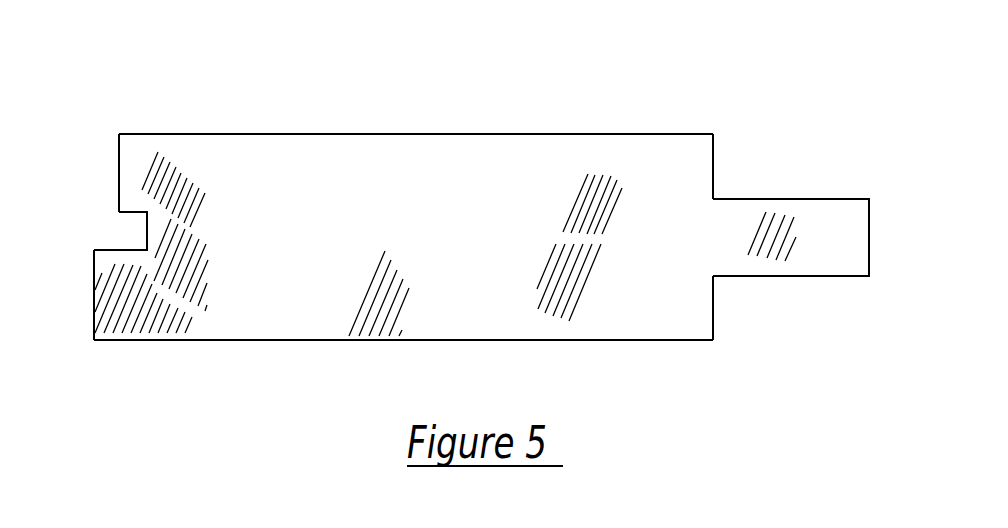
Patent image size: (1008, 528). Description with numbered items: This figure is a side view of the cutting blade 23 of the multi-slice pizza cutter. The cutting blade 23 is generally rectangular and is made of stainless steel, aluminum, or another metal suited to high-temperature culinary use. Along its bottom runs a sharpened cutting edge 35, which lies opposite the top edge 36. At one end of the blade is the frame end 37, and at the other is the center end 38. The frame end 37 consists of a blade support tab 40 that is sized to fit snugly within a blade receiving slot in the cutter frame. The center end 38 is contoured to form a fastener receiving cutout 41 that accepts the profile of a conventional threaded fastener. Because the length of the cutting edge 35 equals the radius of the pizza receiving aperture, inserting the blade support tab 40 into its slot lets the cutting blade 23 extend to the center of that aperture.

The cutting blade 23 is at (180, 87).
The sharpened cutting edge 35 is at (530, 341).
The top edge 36 is at (535, 133).
The frame end 37 is at (781, 303).
The center end 38 is at (100, 144).
The blade support tab 40 is at (818, 218).
The fastener receiving cutout 41 is at (125, 230).